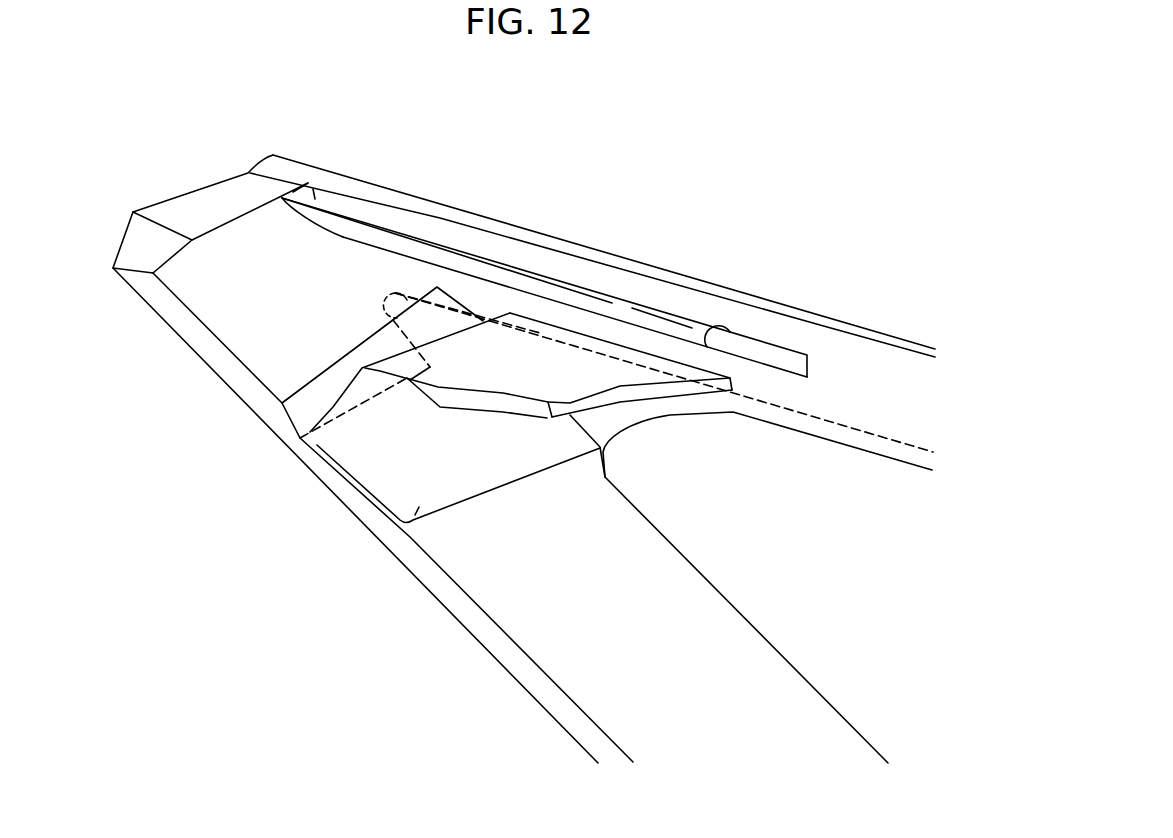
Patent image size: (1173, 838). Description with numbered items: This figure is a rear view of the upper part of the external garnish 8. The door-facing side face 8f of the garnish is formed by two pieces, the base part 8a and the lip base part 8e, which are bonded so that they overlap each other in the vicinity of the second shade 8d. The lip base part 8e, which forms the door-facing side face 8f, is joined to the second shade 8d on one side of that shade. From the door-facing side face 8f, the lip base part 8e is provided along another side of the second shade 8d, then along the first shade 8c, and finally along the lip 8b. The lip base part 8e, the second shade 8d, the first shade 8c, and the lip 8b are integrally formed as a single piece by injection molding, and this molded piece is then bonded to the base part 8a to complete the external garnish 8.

The external garnish 8 is at (645, 178).
The base part 8a is at (863, 525).
The lip 8b is at (798, 333).
The first shade 8c is at (355, 237).
The second shade 8d is at (493, 368).
The lip base part 8e is at (408, 273).
The door-facing side face 8f is at (253, 318).